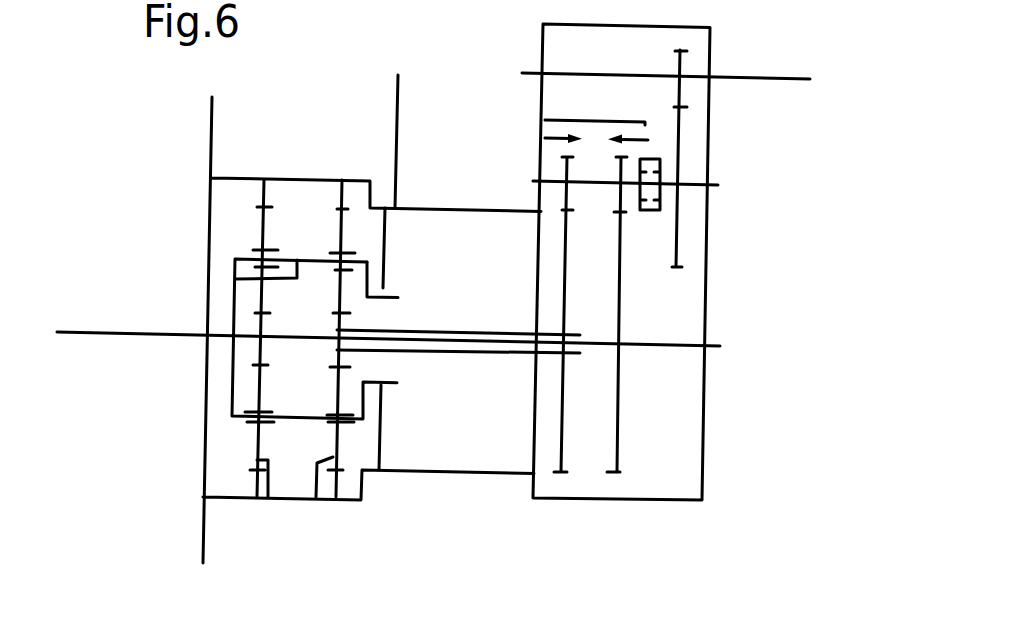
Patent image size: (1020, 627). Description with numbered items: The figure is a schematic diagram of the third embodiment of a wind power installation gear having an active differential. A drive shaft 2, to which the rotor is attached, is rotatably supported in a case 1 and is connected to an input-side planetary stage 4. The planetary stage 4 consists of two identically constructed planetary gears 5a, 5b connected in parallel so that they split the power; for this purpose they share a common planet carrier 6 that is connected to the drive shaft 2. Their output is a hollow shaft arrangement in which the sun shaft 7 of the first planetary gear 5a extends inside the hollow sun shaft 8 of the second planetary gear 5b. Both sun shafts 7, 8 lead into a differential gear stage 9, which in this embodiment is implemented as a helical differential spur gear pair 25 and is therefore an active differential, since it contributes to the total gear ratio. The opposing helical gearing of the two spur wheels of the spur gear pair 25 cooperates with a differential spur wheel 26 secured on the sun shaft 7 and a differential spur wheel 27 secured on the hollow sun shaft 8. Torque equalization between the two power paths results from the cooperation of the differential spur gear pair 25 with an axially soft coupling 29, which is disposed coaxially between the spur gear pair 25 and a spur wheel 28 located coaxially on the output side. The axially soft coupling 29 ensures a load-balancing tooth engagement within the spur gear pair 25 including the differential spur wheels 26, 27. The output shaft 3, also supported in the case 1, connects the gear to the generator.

The case 1 is at (383, 254).
The drive shaft 2 is at (93, 332).
The output shaft 3 is at (767, 73).
The planetary stage 4 is at (295, 168).
The first planetary gear 5a is at (268, 463).
The second planetary gear 5b is at (316, 497).
The planet carrier 6 is at (235, 279).
The sun shaft 7 is at (392, 347).
The hollow sun shaft 8 is at (472, 353).
The differential gear stage 9 is at (584, 512).
The differential spur gear pair 25 is at (596, 112).
The differential spur wheel 26 is at (618, 413).
The differential spur wheel 27 is at (563, 433).
The spur wheel 28 is at (677, 249).
The axially soft coupling 29 is at (660, 173).